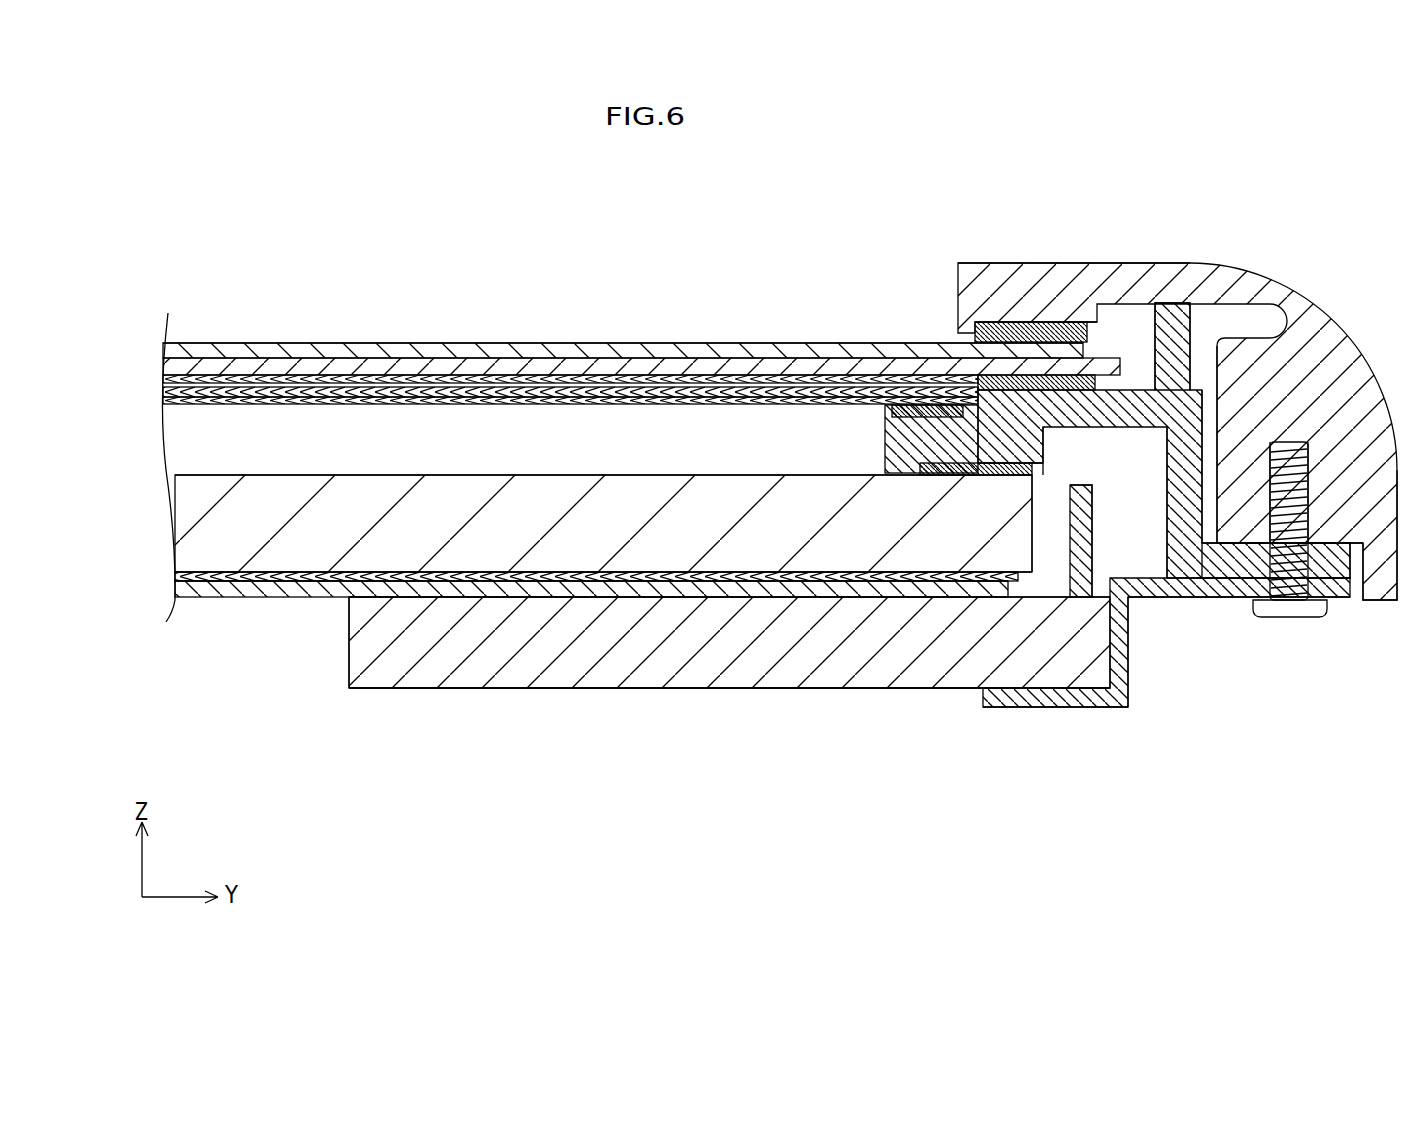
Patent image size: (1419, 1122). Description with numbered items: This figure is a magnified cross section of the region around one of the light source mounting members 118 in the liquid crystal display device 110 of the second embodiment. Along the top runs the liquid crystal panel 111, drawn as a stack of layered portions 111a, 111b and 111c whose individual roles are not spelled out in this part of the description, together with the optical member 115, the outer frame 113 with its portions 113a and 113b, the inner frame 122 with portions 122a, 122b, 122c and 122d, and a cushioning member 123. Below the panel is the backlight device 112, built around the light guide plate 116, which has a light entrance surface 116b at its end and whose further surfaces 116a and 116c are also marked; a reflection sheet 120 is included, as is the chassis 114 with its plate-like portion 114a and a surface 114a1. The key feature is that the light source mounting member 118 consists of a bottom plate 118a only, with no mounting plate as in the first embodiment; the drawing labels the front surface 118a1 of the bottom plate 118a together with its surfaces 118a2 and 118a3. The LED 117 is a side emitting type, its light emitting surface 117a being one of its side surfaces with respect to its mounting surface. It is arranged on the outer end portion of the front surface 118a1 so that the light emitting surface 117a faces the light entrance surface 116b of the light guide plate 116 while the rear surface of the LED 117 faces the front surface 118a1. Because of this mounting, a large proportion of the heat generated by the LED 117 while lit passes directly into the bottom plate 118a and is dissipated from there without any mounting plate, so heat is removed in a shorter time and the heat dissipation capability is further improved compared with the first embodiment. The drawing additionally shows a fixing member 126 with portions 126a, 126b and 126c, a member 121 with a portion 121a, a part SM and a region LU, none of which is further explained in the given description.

The liquid crystal display device 110 is at (423, 189).
The liquid crystal panel 111 is at (641, 307).
The CF substrate 111a is at (738, 350).
The array substrate 111b is at (672, 366).
The polarizing plate 111c is at (580, 342).
The backlight device 112 is at (545, 814).
The outer frame 113 is at (972, 262).
The bezel top plate 113a is at (1033, 280).
The bezel side plate 113b is at (1378, 585).
The chassis 114 is at (584, 637).
The plate-like portion 114a is at (237, 598).
The frame bottom plate upper surface 114a1 is at (270, 572).
The optical member 115 is at (483, 380).
The light guide plate 116 is at (612, 616).
The light exit surface 116a is at (447, 476).
The light entrance surface 116b is at (1036, 527).
The opposite surface 116c is at (615, 575).
The LED 117 is at (1070, 485).
The light emitting surface 117a is at (990, 443).
The light source mounting member 118 is at (710, 678).
The bottom plate 118a is at (807, 653).
The front surface 118a1 is at (868, 580).
The bottom plate lower surface 118a2 is at (735, 690).
The bottom plate end 118a3 is at (349, 633).
The reflection sheet 120 is at (670, 578).
The heat dissipation frame 121 is at (1247, 377).
The screw hole 121a is at (1282, 462).
The inner frame 122 is at (1090, 442).
The frame panel receiving portion 122a is at (920, 437).
The frame bottom portion 122b is at (1337, 562).
The frame side portion 122c is at (1183, 513).
The frame top portion 122d is at (1172, 322).
The cushioning member 123 is at (1040, 376).
The fixing member 126 is at (1166, 718).
The holding member bottom 126a is at (1073, 707).
The holding member side 126b is at (1127, 650).
The holding member top 126c is at (1228, 590).
The light source unit LU is at (1095, 434).
The screw member SM is at (1283, 617).